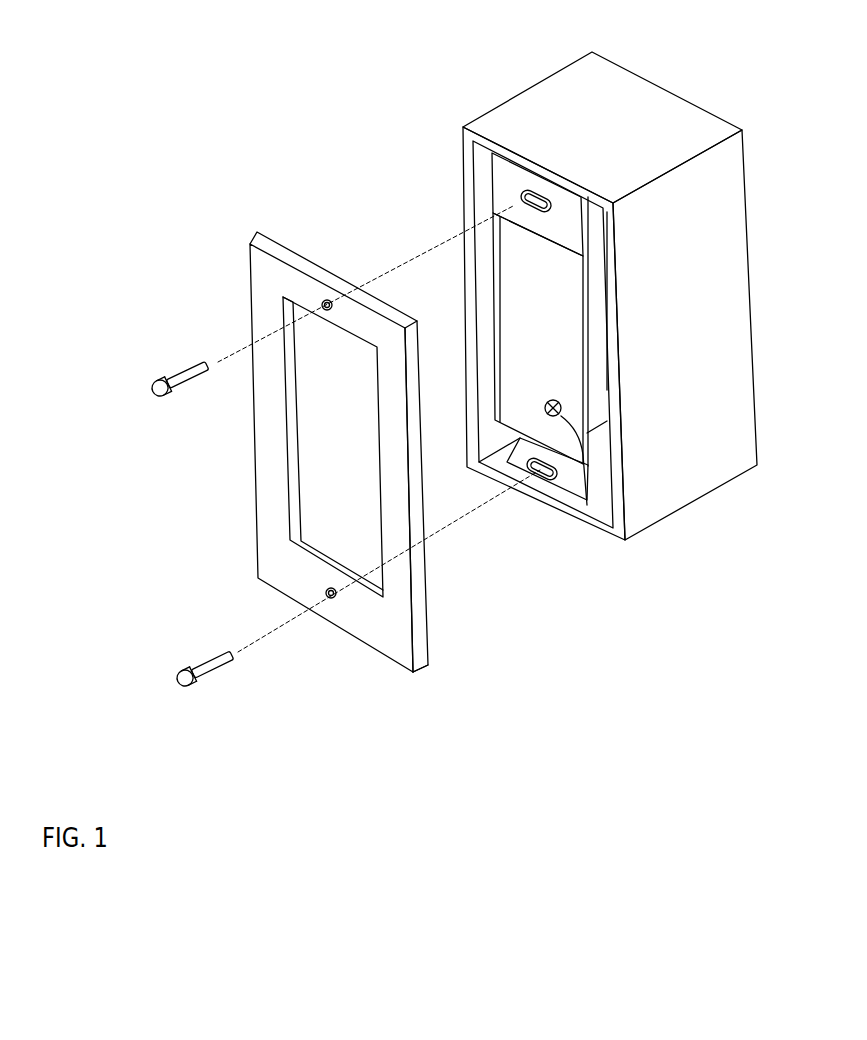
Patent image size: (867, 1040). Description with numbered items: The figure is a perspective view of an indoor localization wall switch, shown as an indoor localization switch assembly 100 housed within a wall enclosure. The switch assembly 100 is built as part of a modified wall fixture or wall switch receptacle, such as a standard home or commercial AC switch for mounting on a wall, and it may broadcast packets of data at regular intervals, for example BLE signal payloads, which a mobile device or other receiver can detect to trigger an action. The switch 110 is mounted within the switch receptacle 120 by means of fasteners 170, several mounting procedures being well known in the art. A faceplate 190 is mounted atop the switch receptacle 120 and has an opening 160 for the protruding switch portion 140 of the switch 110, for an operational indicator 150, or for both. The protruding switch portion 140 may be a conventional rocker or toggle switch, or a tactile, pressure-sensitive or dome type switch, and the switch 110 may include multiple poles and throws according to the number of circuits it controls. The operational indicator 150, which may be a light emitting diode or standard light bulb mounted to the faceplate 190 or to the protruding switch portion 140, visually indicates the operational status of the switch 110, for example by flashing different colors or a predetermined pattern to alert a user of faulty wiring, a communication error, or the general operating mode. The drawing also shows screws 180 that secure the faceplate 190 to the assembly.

The indoor localization switch assembly 100 is at (735, 662).
The switch 110 is at (492, 268).
The switch receptacle 120 is at (690, 96).
The protruding switch portion 140 is at (537, 320).
The operational indicator 150 is at (593, 450).
The opening 160 is at (342, 435).
The fasteners 170 is at (512, 200).
The screws 180 is at (190, 362).
The faceplate 190 is at (440, 636).